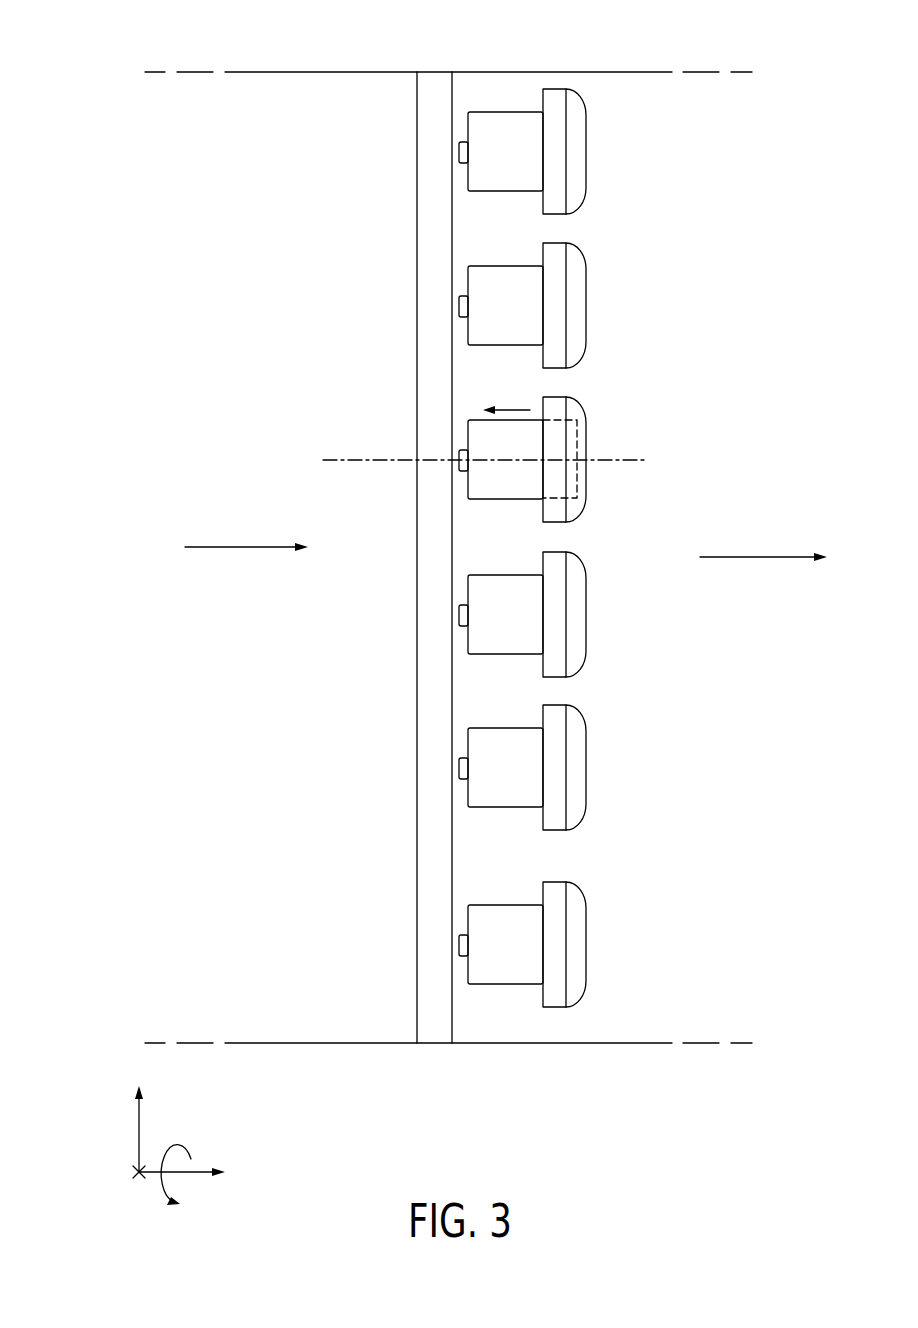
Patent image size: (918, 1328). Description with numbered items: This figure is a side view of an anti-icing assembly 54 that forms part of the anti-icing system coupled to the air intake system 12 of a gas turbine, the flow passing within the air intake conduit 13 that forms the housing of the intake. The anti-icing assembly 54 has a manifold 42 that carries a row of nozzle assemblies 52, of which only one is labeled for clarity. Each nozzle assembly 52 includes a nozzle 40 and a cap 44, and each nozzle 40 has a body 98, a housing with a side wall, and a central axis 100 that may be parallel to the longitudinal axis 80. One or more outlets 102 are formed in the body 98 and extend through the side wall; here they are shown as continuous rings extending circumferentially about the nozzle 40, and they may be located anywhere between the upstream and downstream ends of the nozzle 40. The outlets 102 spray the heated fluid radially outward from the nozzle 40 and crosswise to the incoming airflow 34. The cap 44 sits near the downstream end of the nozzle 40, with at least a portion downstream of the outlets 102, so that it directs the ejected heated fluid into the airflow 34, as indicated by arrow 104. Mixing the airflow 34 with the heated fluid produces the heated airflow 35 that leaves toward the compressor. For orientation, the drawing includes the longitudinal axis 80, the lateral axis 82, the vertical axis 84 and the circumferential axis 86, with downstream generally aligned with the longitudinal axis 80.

The air intake system 12 is at (534, 1096).
The air intake conduit 13 is at (557, 1044).
The airflow 34 is at (242, 549).
The heated airflow 35 is at (757, 559).
The nozzle 40 is at (528, 455).
The manifold 42 is at (416, 172).
The cap 44 is at (586, 417).
The nozzle assembly 52 is at (616, 436).
The anti-icing assembly 54 is at (462, 46).
The longitudinal axis 80 is at (195, 1175).
The lateral axis 82 is at (133, 1172).
The vertical axis 84 is at (137, 1137).
The circumferential axis 86 is at (178, 1146).
The body 98 is at (495, 487).
The central axis 100 is at (362, 456).
The outlets 102 is at (578, 500).
The arrow 104 is at (510, 408).